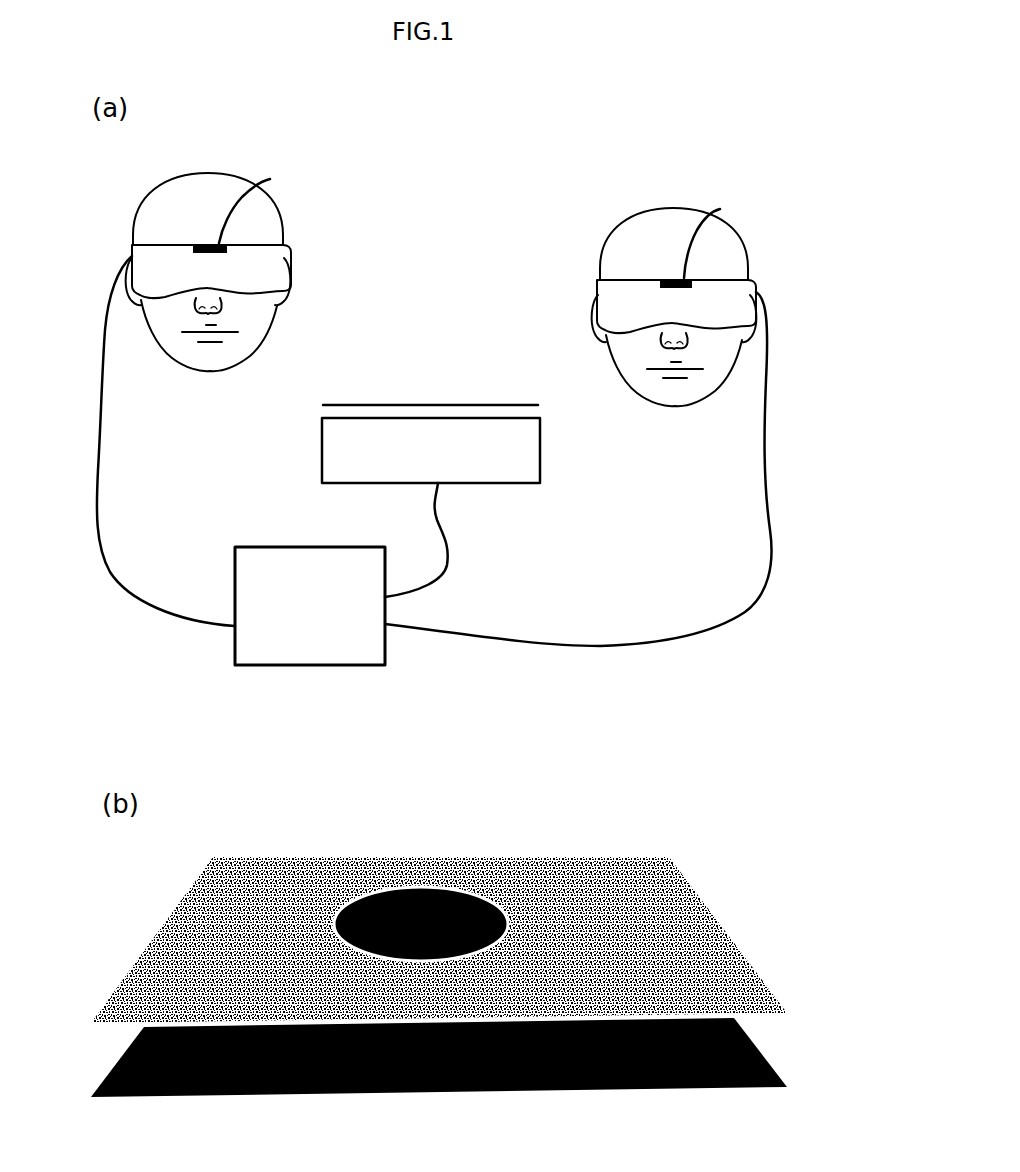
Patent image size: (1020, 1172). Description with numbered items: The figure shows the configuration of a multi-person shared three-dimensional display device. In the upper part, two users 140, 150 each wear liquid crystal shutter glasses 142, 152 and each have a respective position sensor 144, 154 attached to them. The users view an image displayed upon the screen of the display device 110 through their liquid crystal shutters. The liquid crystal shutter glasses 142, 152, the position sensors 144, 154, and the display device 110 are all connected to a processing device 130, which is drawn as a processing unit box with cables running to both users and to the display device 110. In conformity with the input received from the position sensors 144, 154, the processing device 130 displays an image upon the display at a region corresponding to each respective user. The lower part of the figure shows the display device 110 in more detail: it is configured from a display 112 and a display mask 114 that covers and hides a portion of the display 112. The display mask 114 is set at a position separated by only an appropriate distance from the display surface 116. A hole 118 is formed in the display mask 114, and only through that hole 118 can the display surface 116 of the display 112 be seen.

The display device 110 is at (439, 690).
The display 112 is at (512, 469).
The display mask 114 is at (536, 404).
The display surface 116 is at (262, 1089).
The hole 118 is at (356, 921).
The processing device 130 is at (356, 653).
The user 140 is at (148, 212).
The liquid crystal shutter glasses 142 is at (258, 268).
The position sensor 144 is at (270, 179).
The user 150 is at (628, 232).
The liquid crystal shutter glasses 152 is at (723, 299).
The position sensor 154 is at (720, 209).